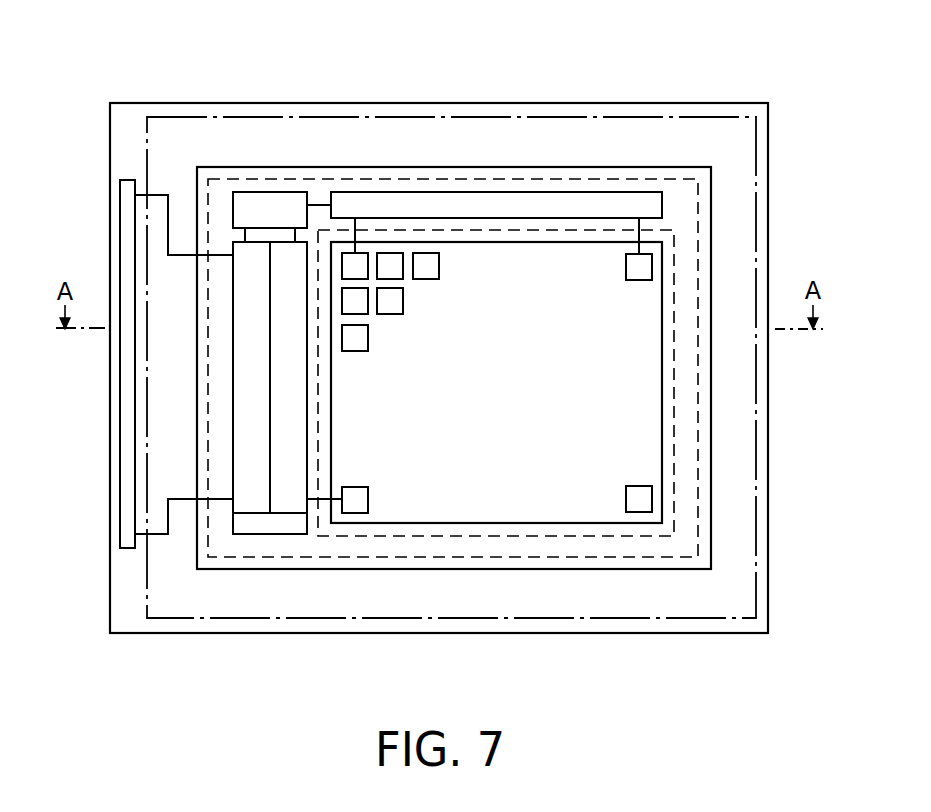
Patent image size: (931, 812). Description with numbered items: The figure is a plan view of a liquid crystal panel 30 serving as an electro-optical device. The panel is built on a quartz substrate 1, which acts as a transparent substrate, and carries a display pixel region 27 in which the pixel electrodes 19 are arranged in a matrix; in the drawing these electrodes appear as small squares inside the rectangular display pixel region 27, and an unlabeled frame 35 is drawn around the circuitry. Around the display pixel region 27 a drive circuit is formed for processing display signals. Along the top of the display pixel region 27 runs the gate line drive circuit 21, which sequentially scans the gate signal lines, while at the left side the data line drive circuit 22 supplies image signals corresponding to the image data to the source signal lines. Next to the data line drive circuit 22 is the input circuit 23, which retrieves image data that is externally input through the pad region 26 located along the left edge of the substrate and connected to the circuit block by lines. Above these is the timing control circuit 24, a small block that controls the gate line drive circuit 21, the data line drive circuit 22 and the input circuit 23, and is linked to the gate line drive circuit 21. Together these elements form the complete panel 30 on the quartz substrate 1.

The liquid crystal panel 30 is at (726, 77).
The quartz substrate 1 is at (762, 233).
The seal material 35 is at (745, 515).
The display pixel region 27 is at (643, 378).
The gate line drive circuit 21 is at (505, 203).
The timing control circuit 24 is at (272, 202).
The input circuit 23 is at (252, 498).
The data line drive circuit 22 is at (288, 498).
The pad region 26 is at (127, 450).
The pixel electrodes 19 is at (429, 265).